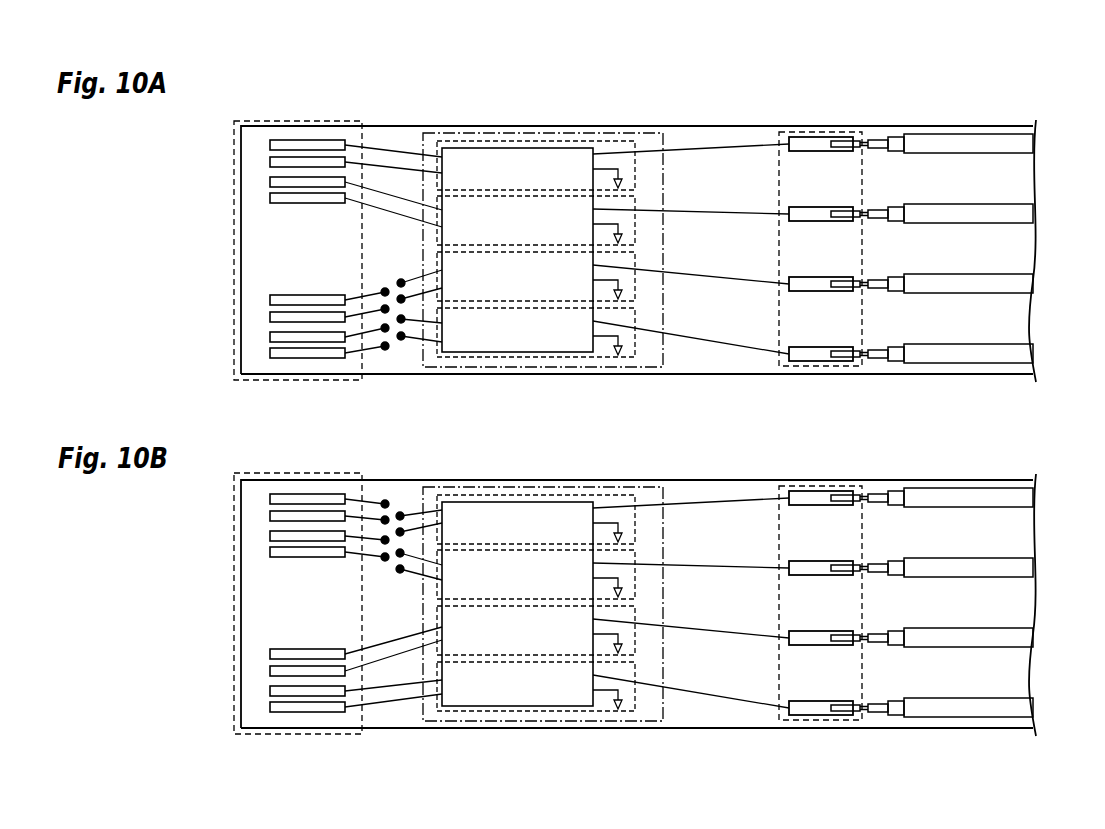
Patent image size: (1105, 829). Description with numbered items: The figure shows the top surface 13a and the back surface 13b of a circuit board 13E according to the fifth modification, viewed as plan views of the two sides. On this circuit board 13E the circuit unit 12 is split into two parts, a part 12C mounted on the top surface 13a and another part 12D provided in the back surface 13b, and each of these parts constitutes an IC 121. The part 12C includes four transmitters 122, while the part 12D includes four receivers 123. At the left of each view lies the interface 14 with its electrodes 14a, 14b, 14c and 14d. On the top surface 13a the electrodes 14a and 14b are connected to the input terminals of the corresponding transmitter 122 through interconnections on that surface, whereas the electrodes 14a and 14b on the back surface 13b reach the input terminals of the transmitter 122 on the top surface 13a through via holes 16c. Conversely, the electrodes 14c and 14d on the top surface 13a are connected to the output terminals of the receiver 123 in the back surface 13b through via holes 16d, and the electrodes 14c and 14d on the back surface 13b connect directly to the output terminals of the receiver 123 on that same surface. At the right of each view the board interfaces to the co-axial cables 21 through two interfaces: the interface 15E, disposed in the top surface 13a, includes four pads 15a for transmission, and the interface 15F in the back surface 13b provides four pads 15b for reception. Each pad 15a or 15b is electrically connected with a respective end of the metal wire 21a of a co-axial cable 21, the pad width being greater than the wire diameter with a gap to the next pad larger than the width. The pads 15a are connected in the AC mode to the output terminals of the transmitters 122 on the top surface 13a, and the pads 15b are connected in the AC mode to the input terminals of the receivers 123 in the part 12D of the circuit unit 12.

In FIG. 10A, the circuit unit 12 is at (538, 218).
In FIG. 10B, the circuit unit 12 is at (554, 580).
In FIG. 10A, the part of the circuit unit 12C is at (537, 133).
In FIG. 10B, the part of the circuit unit 12D is at (554, 580).
In FIG. 10A, the IC 121 is at (447, 140).
In FIG. 10B, the IC 121 is at (516, 572).
In FIG. 10A, the transmitter 122 is at (536, 249).
In FIG. 10B, the receiver 123 is at (536, 603).
In FIG. 10A, the circuit board 13E is at (760, 126).
In FIG. 10B, the circuit board 13E is at (638, 566).
In FIG. 10A, the top surface 13a is at (692, 140).
In FIG. 10B, the back surface 13b is at (638, 578).
In FIG. 10A, the interface 14 is at (310, 121).
In FIG. 10B, the interface 14 is at (270, 571).
In FIG. 10A, the electrode 14a is at (338, 145).
In FIG. 10B, the electrode 14a is at (266, 489).
In FIG. 10A, the electrode 14b is at (283, 162).
In FIG. 10B, the electrode 14b is at (261, 507).
In FIG. 10A, the electrode 14c is at (323, 300).
In FIG. 10B, the electrode 14c is at (261, 648).
In FIG. 10A, the electrode 14d is at (285, 318).
In FIG. 10B, the electrode 14d is at (261, 674).
In FIG. 10A, the interface 15E is at (818, 134).
In FIG. 10B, the interface 15F is at (821, 595).
In FIG. 10A, the pad 15a is at (807, 150).
In FIG. 10B, the pad 15b is at (785, 630).
In FIG. 10A, the via hole 16c is at (401, 283).
In FIG. 10B, the via hole 16c is at (412, 521).
In FIG. 10A, the via hole 16d is at (385, 292).
In FIG. 10B, the via hole 16d is at (382, 538).
In FIG. 10A, the co-axial cable 21 is at (980, 140).
In FIG. 10B, the co-axial cable 21 is at (962, 576).
In FIG. 10A, the metal wire 21a is at (845, 138).
In FIG. 10B, the metal wire 21a is at (865, 577).